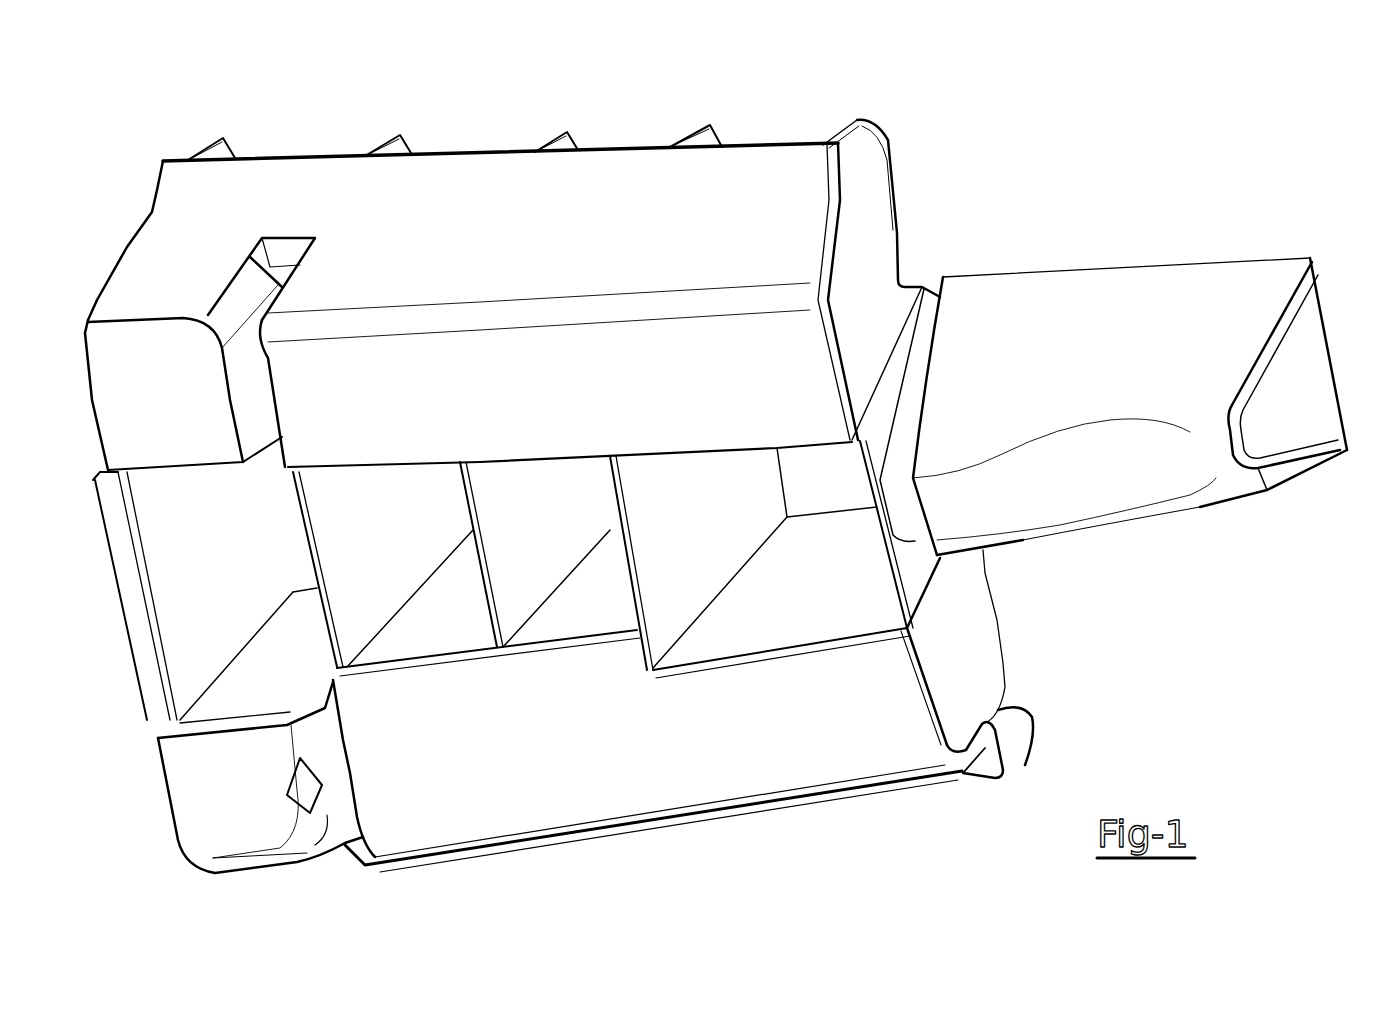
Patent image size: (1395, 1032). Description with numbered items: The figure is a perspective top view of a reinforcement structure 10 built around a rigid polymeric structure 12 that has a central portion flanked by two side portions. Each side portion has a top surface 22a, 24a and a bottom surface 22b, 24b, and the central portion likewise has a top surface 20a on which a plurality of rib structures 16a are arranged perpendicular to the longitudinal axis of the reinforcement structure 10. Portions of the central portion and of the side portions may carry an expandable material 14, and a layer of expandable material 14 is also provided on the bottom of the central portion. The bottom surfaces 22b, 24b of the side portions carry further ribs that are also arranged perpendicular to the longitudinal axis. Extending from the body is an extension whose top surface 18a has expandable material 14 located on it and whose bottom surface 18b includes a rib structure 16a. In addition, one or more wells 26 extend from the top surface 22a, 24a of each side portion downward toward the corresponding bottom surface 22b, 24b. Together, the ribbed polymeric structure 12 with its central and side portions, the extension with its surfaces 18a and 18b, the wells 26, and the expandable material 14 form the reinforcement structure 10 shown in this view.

The reinforcement structure 10 is at (1152, 171).
The rigid polymeric structure 12 is at (977, 633).
The expandable material 14 is at (634, 394).
The rib structures 16a is at (420, 532).
The top surface of extension 18a is at (1083, 308).
The bottom surface of extension 18b is at (1330, 357).
The top surface of central portion 20a is at (122, 608).
The top surface of side portion 22a is at (438, 245).
The bottom surface of side portion 22b is at (662, 145).
The top surface of side portion 24a is at (660, 780).
The bottom surface of side portion 24b is at (1025, 765).
The well 26 is at (255, 362).